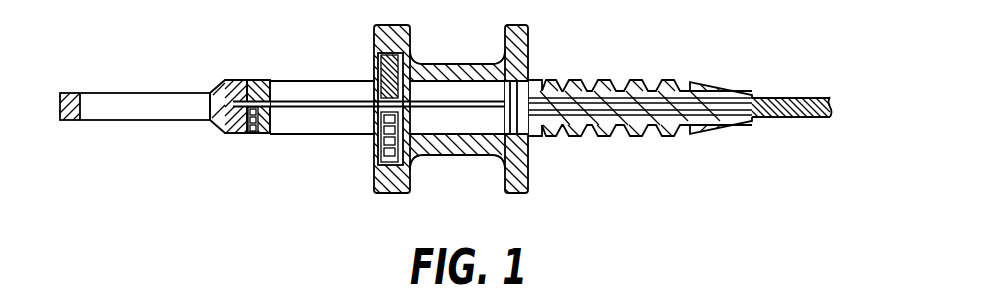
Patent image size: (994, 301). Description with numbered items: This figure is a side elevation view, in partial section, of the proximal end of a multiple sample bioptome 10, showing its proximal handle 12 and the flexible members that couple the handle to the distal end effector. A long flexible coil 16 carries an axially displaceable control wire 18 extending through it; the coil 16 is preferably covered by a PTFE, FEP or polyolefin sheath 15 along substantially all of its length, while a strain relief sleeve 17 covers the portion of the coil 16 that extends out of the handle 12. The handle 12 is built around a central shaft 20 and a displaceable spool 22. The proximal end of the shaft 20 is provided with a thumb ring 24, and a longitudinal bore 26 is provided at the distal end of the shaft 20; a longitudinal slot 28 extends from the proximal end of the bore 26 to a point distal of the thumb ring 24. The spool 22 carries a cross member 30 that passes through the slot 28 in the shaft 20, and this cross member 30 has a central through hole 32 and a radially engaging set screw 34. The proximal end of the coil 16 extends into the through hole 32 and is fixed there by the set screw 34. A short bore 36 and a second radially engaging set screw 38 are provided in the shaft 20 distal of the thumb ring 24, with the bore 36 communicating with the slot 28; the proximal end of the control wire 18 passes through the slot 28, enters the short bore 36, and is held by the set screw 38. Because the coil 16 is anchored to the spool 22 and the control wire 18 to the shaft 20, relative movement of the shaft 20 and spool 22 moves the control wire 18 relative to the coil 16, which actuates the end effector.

The multiple sample bioptome 10 is at (283, 203).
The proximal handle 12 is at (640, 141).
The sheath 15 is at (823, 117).
The flexible coil 16 is at (793, 117).
The strain relief sleeve 17 is at (765, 98).
The control wire 18 is at (320, 107).
The central shaft 20 is at (268, 80).
The displaceable spool 22 is at (482, 63).
The thumb ring 24 is at (116, 108).
The longitudinal bore 26 is at (617, 91).
The longitudinal slot 28 is at (320, 92).
The cross member 30 is at (388, 58).
The central through hole 32 is at (403, 75).
The set screw 34 is at (388, 134).
The short bore 36 is at (253, 80).
The set screw 38 is at (254, 127).